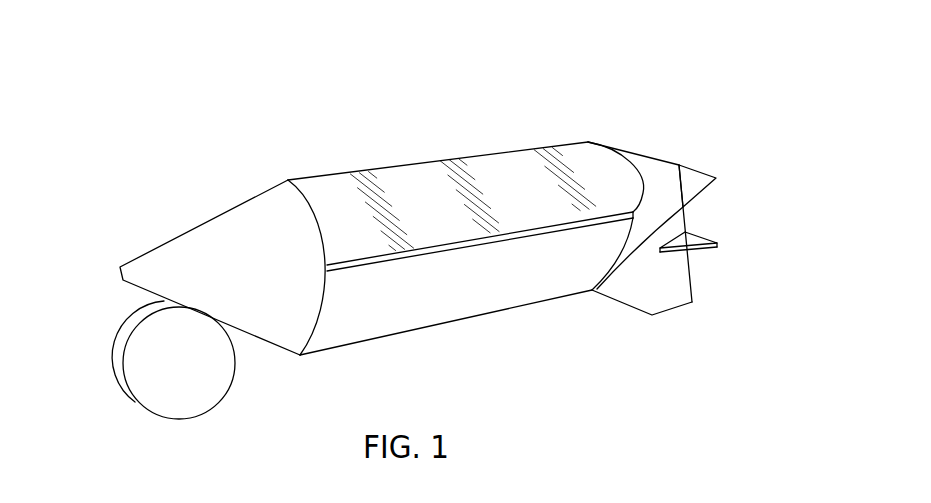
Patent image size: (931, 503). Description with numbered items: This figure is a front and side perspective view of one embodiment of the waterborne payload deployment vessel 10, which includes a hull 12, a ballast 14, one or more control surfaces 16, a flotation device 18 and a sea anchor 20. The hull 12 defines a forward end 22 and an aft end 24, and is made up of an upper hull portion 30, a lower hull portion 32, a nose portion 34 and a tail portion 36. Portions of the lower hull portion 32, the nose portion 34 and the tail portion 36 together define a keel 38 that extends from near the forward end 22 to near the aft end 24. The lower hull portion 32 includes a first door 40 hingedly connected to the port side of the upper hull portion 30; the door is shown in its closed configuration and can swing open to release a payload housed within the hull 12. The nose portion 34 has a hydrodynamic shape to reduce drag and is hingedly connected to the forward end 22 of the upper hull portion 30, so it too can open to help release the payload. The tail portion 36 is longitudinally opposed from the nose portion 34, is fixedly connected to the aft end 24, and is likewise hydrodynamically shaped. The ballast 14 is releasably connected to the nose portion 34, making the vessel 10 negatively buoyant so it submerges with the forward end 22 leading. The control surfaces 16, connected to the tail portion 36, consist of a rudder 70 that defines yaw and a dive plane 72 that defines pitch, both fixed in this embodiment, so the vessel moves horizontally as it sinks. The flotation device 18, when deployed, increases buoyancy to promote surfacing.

The waterborne payload deployment vessel 10 is at (417, 234).
The hull 12 is at (452, 162).
The ballast 14 is at (178, 421).
The control surfaces 16 is at (679, 251).
The flotation device 18 is at (525, 162).
The sea anchor 20 is at (696, 165).
The forward end 22 is at (172, 319).
The aft end 24 is at (689, 204).
The upper hull portion 30 is at (402, 178).
The lower hull portion 32 is at (486, 320).
The nose portion 34 is at (208, 218).
The tail portion 36 is at (647, 157).
The keel 38 is at (297, 317).
The first door 40 is at (402, 313).
The rudder 70 is at (665, 313).
The dive plane 72 is at (718, 243).